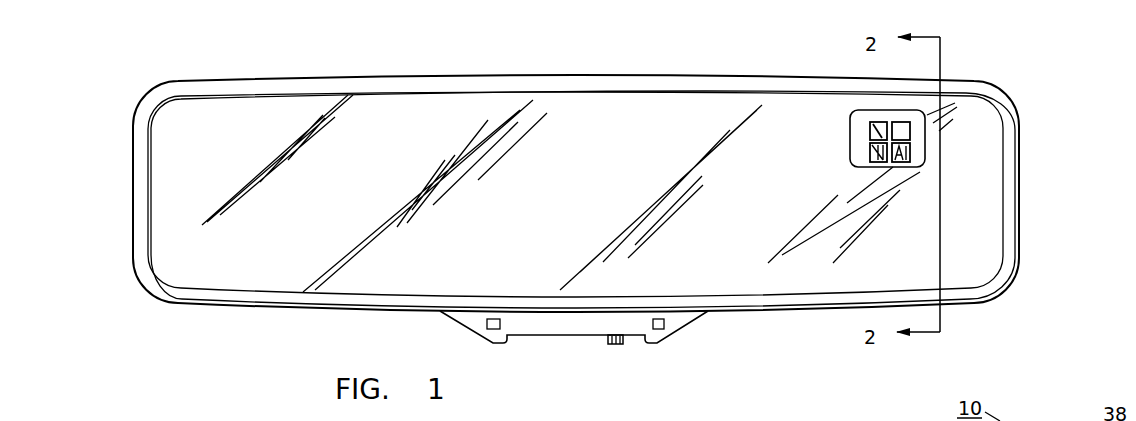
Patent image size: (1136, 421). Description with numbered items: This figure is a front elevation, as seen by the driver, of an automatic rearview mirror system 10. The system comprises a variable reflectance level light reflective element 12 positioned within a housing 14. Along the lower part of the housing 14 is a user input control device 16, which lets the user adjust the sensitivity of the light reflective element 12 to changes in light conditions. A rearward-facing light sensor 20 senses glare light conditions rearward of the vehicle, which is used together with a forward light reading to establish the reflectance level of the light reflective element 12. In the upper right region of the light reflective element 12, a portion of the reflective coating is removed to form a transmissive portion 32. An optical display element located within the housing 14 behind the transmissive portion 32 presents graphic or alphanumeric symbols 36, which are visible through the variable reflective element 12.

The automatic rearview mirror system 10 is at (624, 208).
The variable reflectance level light reflective element 12 is at (672, 141).
The housing 14 is at (1018, 205).
The user input control device 16 is at (620, 344).
The rearward-facing light sensor 20 is at (667, 323).
The transmissive portion 32 is at (848, 125).
The graphic or alphanumeric symbols 36 is at (903, 122).